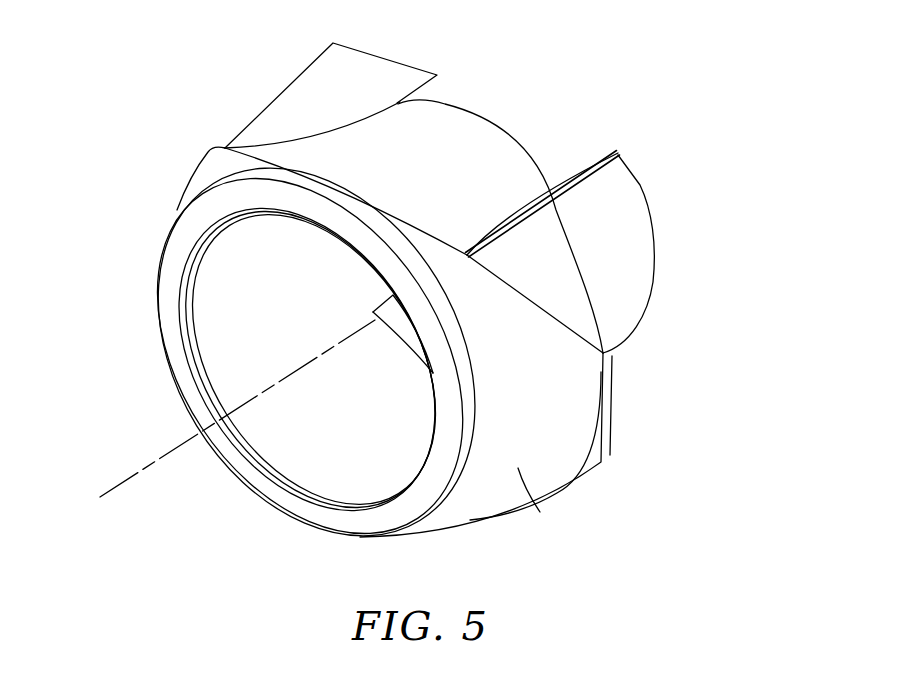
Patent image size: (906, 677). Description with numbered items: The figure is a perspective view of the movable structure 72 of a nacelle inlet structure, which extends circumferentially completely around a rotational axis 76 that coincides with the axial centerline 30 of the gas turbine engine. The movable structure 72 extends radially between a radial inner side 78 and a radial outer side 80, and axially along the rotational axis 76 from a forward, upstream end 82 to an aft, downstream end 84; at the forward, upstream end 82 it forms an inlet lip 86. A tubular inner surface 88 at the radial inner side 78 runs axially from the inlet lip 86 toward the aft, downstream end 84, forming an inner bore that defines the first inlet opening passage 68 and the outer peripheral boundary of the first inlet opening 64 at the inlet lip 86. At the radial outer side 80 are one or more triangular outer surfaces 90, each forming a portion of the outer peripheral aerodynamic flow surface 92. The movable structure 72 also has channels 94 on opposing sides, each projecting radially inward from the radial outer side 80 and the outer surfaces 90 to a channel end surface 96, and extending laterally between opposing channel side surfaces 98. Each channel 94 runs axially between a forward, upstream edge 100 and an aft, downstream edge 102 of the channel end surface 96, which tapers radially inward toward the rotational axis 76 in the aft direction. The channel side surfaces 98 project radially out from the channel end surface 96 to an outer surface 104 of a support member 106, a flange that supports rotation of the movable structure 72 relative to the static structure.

The axial centerline 30 is at (237, 451).
The rotational axis 76 is at (122, 484).
The first inlet opening 64 is at (205, 329).
The first inlet opening passage 68 is at (306, 321).
The movable structure 72 is at (667, 70).
The radial inner side 78 is at (314, 464).
The radial outer side 80 is at (546, 423).
The forward, upstream end 82 is at (168, 278).
The aft, downstream end 84 is at (640, 202).
The inlet lip 86 is at (340, 513).
The inner surface 88 is at (375, 440).
The outer surface 90 is at (337, 349).
The outer peripheral aerodynamic flow surface 92 is at (207, 165).
The channel 94 is at (289, 115).
The channel end surface 96 is at (467, 132).
The channel side surface 98 is at (313, 78).
The forward, upstream edge 100 is at (443, 250).
The aft, downstream edge 102 is at (527, 152).
The outer surface of support member 104 is at (268, 83).
The support member 106 is at (655, 250).